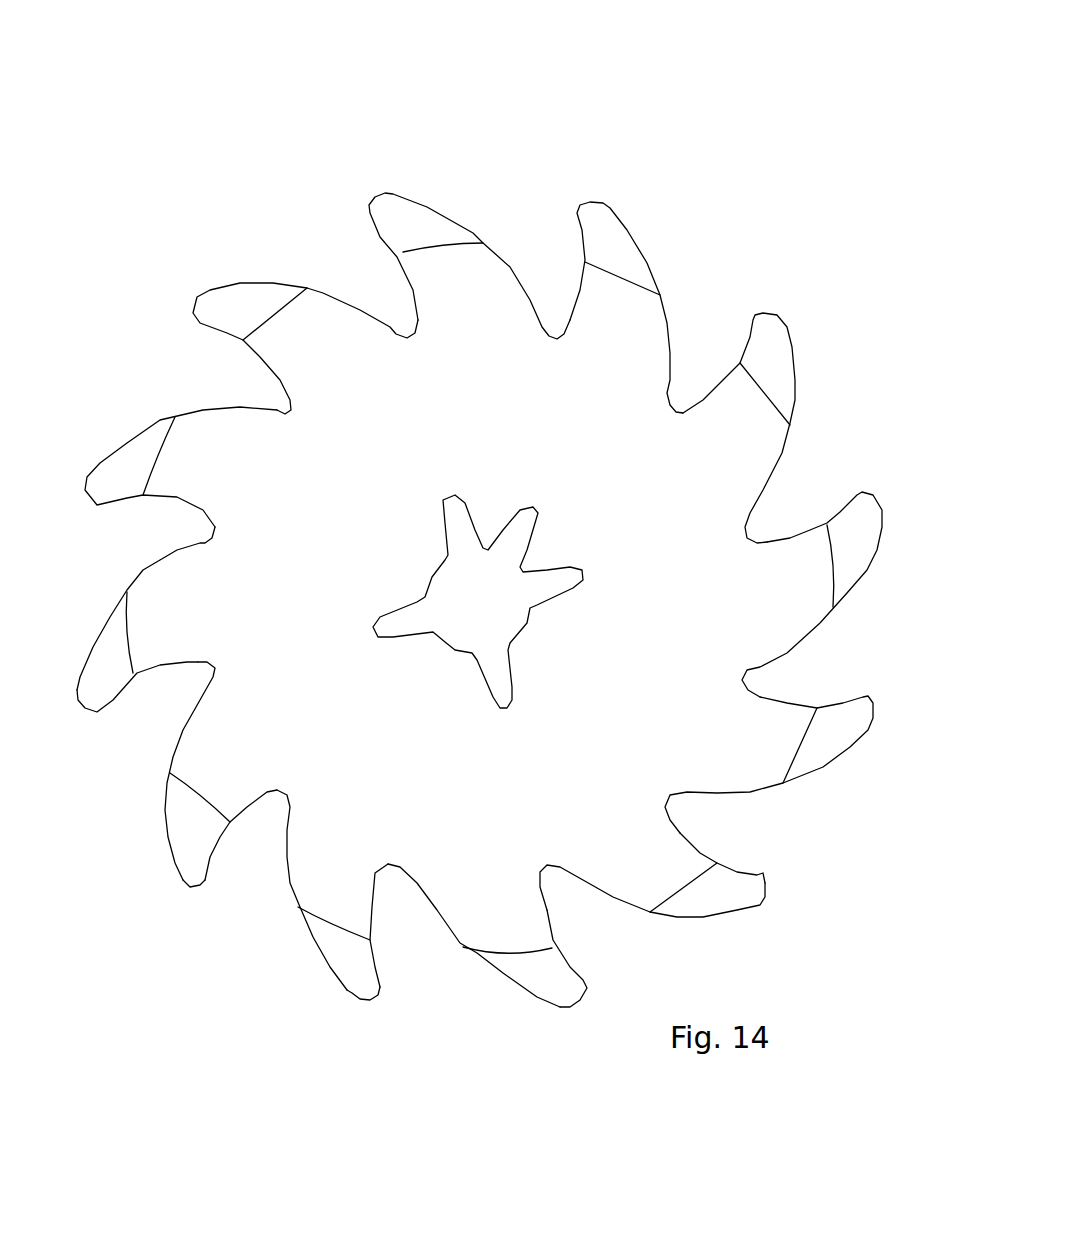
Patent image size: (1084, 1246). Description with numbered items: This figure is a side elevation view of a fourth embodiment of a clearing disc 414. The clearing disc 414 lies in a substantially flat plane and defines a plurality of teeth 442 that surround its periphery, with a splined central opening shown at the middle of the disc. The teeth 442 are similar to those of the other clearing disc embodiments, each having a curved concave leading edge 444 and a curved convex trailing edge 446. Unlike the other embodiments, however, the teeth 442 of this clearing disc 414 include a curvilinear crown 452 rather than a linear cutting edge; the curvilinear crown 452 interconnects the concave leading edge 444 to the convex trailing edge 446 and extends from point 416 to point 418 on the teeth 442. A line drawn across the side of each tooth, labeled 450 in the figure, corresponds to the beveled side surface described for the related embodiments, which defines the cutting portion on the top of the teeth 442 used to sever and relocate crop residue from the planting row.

The clearing disc 414 is at (645, 108).
The point 416 is at (760, 906).
The point 418 is at (765, 873).
The teeth 442 is at (171, 402).
The concave leading edge 444 is at (231, 822).
The convex trailing edge 446 is at (163, 800).
The ramp edge 450 is at (100, 670).
The curvilinear crown 452 is at (370, 999).